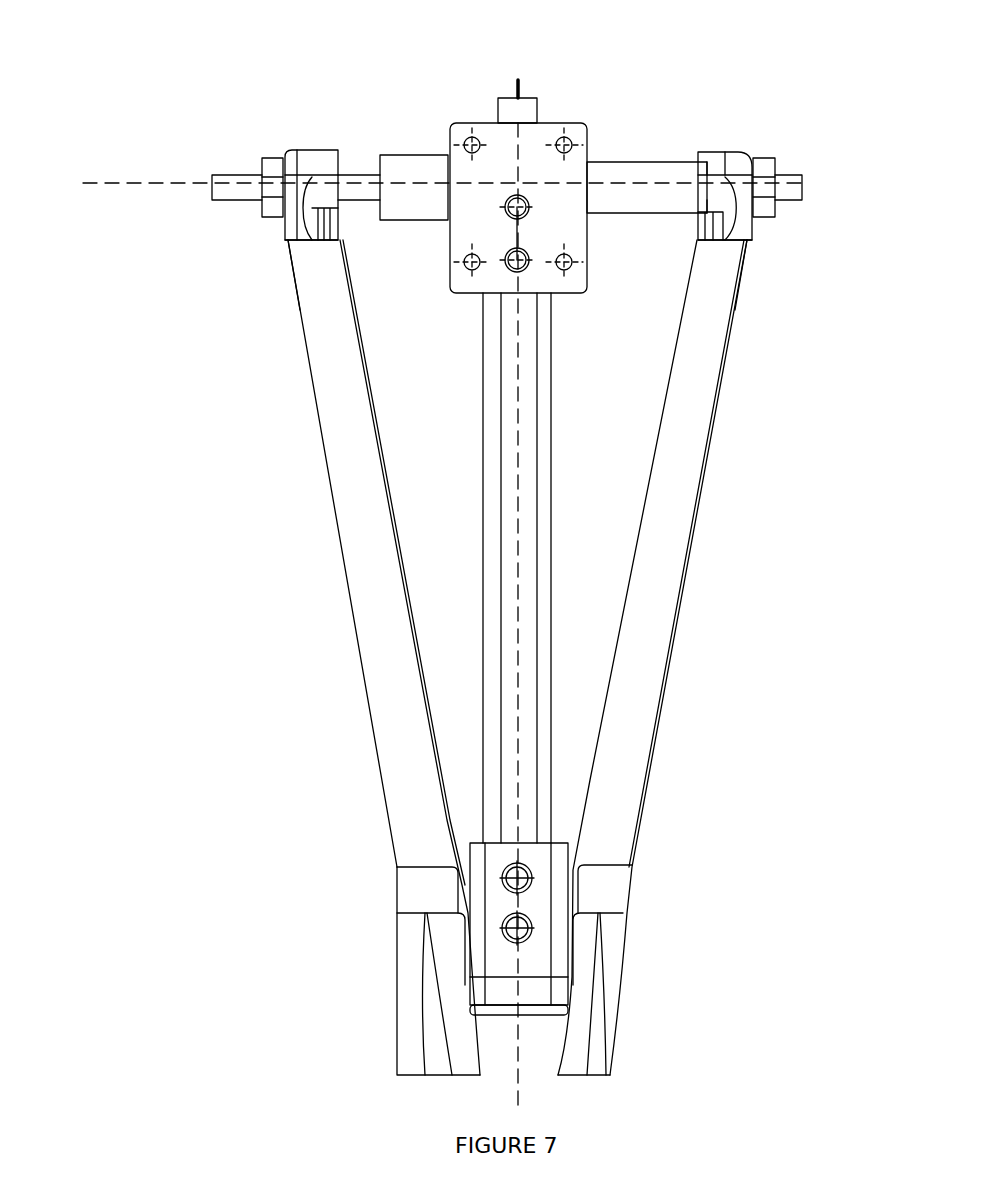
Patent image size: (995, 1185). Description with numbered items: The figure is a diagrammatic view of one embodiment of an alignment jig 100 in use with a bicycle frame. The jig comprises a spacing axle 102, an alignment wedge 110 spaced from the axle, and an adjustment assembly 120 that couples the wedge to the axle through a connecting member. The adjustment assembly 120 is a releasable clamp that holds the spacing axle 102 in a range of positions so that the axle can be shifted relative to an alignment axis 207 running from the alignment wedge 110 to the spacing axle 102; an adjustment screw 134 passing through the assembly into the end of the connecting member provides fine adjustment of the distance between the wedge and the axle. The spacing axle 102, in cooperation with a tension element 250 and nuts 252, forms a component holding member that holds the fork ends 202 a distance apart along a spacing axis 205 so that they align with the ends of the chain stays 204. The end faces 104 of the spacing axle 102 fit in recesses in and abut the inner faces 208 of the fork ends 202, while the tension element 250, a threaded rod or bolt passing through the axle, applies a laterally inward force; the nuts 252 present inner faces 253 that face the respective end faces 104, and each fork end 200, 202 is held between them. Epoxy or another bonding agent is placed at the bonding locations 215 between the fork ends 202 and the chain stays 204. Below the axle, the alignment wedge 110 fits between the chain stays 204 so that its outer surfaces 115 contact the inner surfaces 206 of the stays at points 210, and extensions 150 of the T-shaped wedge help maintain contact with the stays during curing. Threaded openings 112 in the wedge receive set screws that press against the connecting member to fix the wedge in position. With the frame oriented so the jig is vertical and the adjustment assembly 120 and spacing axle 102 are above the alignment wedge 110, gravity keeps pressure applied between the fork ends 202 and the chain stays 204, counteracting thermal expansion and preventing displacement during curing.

The alignment jig 100 is at (471, 353).
The spacing axle 102 is at (628, 165).
The end faces 104 is at (328, 205).
The alignment wedge 110 is at (532, 858).
The threaded openings 112 is at (506, 920).
The outer surfaces 115 is at (468, 990).
The adjustment assembly 120 is at (485, 123).
The adjustment screw 134 is at (518, 80).
The extensions 150 is at (525, 995).
The fork end 200 is at (762, 135).
The fork ends 202 is at (317, 162).
The chain stays 204 is at (342, 522).
The spacing axis 205 is at (400, 160).
The inner surfaces 206 is at (406, 586).
The alignment axis 207 is at (517, 1078).
The inner faces 208 is at (332, 172).
The contact points 210 is at (468, 972).
The bonding locations 215 is at (307, 248).
The tension element 250 is at (220, 195).
The nuts 252 is at (260, 170).
The inner faces 253 is at (286, 162).